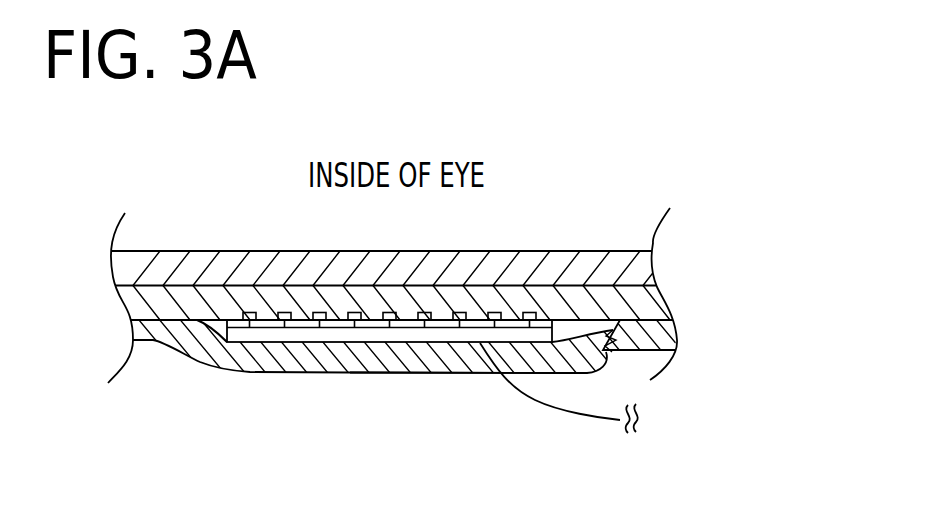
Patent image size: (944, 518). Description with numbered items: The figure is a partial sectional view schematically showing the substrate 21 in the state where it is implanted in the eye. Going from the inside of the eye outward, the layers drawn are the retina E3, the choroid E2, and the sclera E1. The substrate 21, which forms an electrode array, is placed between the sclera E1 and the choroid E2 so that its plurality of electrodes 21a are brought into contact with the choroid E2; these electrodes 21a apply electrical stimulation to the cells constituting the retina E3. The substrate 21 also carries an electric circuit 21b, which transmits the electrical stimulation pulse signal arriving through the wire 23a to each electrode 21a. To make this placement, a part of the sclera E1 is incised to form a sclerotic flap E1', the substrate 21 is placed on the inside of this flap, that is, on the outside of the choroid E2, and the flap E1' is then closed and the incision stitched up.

The substrate 21 is at (371, 303).
The electrodes 21a is at (249, 316).
The electric circuit 21b is at (337, 338).
The wire 23a is at (573, 410).
The sclera E1 is at (443, 345).
The sclerotic flap E1' is at (468, 432).
The choroid E2 is at (660, 300).
The retina E3 is at (653, 270).